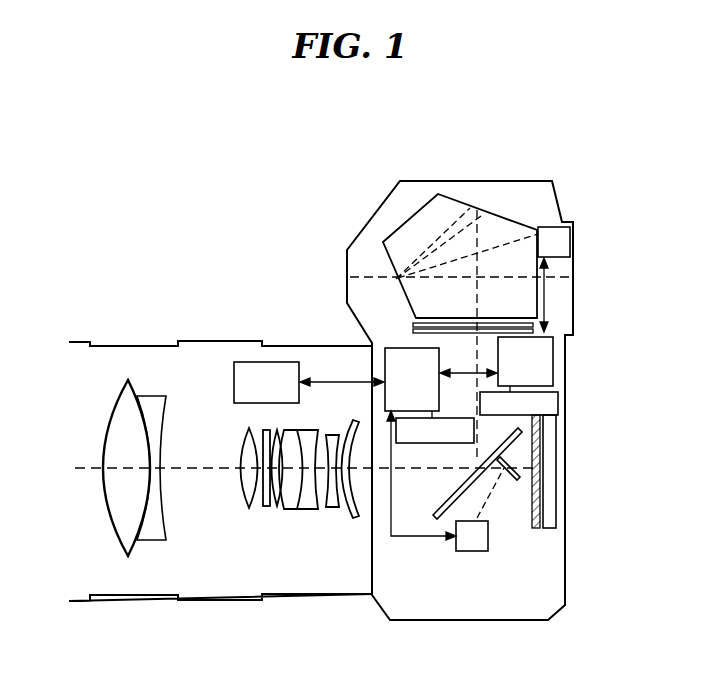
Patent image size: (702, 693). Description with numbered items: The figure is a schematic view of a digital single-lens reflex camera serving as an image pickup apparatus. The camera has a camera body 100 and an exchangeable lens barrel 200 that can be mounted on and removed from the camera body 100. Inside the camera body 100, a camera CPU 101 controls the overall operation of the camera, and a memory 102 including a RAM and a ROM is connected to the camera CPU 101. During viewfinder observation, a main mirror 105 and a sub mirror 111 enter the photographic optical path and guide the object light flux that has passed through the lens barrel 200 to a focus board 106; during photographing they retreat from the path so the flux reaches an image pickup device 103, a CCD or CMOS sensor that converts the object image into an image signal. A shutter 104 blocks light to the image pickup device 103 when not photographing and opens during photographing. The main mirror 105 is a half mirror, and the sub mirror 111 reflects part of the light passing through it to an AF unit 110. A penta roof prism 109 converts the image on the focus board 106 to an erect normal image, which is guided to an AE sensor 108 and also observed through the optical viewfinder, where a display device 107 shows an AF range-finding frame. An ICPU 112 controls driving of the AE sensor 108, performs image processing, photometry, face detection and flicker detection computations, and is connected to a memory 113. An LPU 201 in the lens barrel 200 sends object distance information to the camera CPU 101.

The camera body 100 is at (512, 603).
The camera CPU 101 is at (396, 350).
The memory 102 is at (432, 444).
The image pickup device 103 is at (549, 512).
The shutter 104 is at (541, 430).
The main mirror 105 is at (434, 519).
The focus board 106 is at (530, 331).
The display device 107 is at (500, 325).
The AE sensor 108 is at (573, 227).
The penta roof prism 109 is at (396, 248).
The AF unit 110 is at (490, 538).
The sub mirror 111 is at (521, 472).
The ICPU 112 is at (553, 361).
The memory 113 is at (560, 393).
The lens barrel 200 is at (88, 380).
The LPU 201 is at (239, 360).